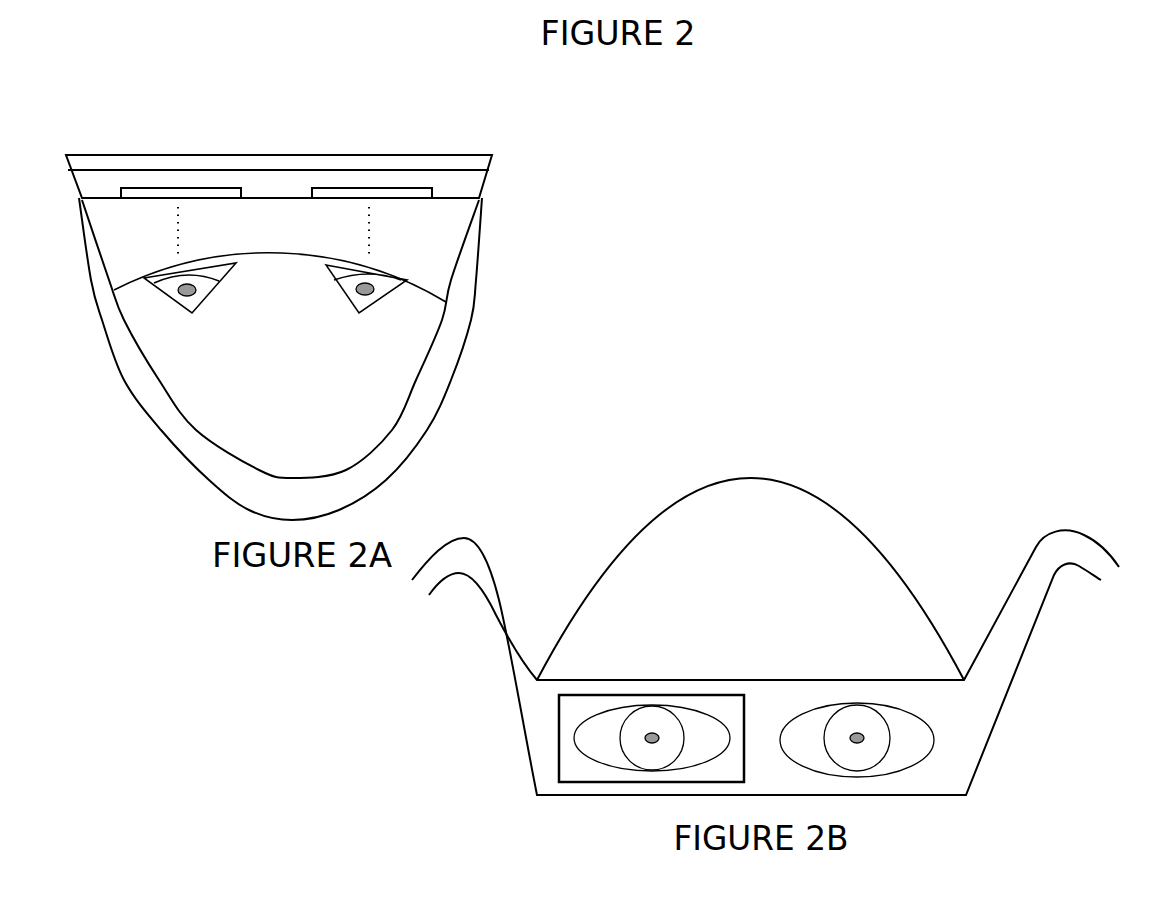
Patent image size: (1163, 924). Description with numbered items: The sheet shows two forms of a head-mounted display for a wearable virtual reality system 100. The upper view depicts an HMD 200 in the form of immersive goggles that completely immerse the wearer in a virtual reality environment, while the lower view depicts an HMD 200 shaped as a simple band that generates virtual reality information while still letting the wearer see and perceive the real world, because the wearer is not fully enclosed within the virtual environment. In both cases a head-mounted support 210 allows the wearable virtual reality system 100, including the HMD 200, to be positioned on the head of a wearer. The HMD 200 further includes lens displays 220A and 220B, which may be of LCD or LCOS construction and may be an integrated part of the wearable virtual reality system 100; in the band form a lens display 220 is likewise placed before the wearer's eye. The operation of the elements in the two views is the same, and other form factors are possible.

In FIG. 2B, the wearable virtual reality system 100 is at (778, 684).
In FIG. 2A, the HMD 200 is at (497, 150).
In FIG. 2B, the HMD 200 is at (556, 738).
In FIG. 2A, the head-mounted support 210 is at (452, 381).
In FIG. 2B, the head-mounted support 210 is at (1029, 646).
In FIG. 2B, the lens display 220 is at (607, 733).
In FIG. 2A, the lens display 220A is at (172, 186).
In FIG. 2A, the lens display 220B is at (372, 186).